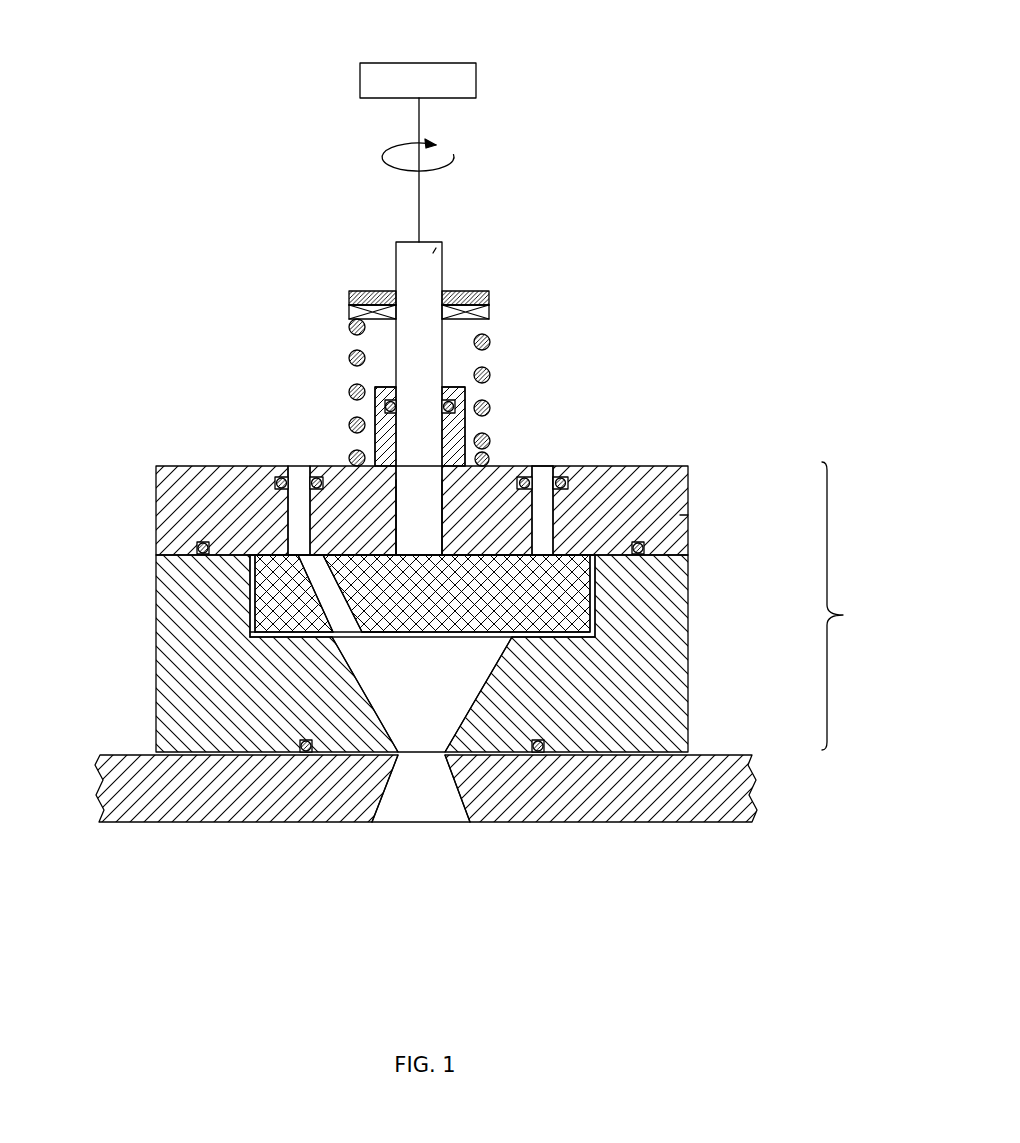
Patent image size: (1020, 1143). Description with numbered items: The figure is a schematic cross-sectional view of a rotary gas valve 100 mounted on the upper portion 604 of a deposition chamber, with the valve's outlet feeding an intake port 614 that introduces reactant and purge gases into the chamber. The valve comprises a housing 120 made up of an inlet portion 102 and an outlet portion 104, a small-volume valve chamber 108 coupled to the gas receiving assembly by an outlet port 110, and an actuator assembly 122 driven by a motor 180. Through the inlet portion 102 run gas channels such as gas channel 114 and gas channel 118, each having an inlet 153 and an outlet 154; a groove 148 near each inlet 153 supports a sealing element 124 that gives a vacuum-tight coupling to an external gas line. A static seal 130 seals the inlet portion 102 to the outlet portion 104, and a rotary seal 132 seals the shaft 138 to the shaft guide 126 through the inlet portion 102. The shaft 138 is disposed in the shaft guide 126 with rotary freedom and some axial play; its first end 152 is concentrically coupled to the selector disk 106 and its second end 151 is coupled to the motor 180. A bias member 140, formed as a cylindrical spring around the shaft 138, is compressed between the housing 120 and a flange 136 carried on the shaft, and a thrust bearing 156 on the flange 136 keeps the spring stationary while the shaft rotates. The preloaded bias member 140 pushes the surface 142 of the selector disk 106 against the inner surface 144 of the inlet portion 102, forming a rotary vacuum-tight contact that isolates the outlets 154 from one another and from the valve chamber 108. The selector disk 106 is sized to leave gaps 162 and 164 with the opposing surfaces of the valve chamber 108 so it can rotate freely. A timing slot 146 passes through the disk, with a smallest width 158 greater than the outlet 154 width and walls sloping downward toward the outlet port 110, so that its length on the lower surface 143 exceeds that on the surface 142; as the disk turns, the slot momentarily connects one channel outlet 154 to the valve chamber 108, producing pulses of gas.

The rotary gas valve 100 is at (638, 27).
The inlet portion 102 is at (156, 525).
The outlet portion 104 is at (688, 673).
The selector disk 106 is at (650, 637).
The valve chamber 108 is at (403, 706).
The outlet port 110 is at (425, 762).
The gas channel 114 is at (307, 470).
The gas channel 118 is at (562, 478).
The housing 120 is at (861, 606).
The actuator assembly 122 is at (292, 170).
The sealing element 124 is at (284, 480).
The shaft guide 126 is at (415, 548).
The seal 130 is at (688, 535).
The rotary seal 132 is at (368, 405).
The flange 136 is at (492, 293).
The shaft 138 is at (432, 272).
The bias member 140 is at (490, 342).
The surface of the selector disk 142 is at (650, 600).
The surface of the selector disk 143 is at (425, 637).
The inner surface 144 is at (688, 518).
The timing slot 146 is at (323, 597).
The groove 148 is at (270, 485).
The second end of the shaft 151 is at (433, 253).
The first end of the shaft 152 is at (535, 466).
The inlet 153 is at (297, 453).
The outlet 154 is at (297, 550).
The thrust bearing 156 is at (492, 308).
The smallest width 158 is at (250, 577).
The gap 162 is at (252, 622).
The gap 164 is at (290, 640).
The motor 180 is at (477, 78).
The upper portion 604 is at (208, 822).
The intake port 614 is at (400, 845).